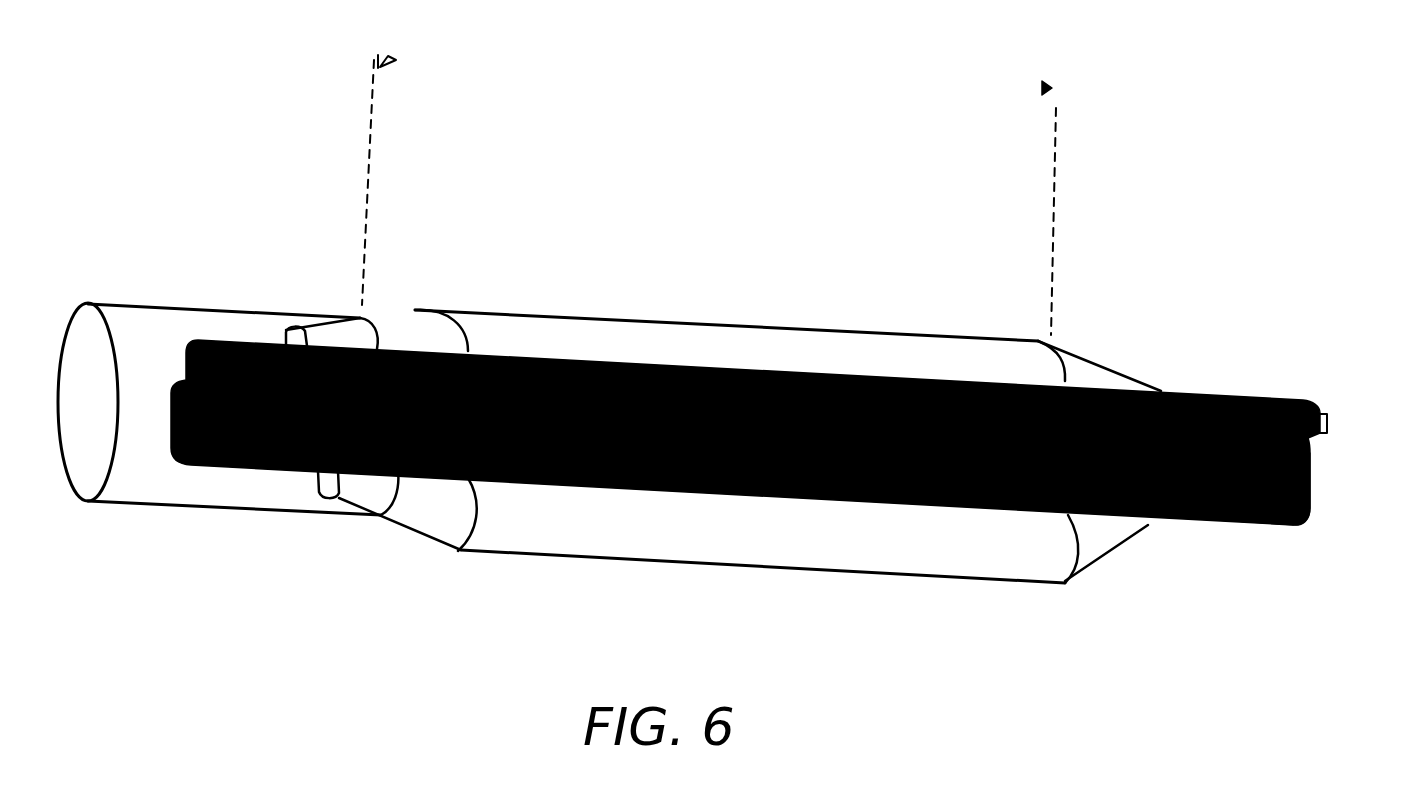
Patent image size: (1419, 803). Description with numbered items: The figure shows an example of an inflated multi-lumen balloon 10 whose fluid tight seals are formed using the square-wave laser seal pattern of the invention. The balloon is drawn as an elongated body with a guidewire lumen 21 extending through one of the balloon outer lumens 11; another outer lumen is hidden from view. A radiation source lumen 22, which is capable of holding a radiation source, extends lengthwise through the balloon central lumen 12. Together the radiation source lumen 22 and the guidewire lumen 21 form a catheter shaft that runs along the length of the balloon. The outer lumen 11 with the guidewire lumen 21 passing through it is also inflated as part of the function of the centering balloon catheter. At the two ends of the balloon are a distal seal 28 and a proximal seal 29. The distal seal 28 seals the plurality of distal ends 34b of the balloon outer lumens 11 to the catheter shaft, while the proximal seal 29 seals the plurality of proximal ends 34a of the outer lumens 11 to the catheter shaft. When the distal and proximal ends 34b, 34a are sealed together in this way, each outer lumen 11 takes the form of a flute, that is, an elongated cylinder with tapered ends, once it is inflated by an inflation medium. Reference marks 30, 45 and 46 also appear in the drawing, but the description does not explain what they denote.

The multi-lumen balloon 10 is at (700, 313).
The balloon outer lumen 11 is at (733, 337).
The balloon central lumen 12 is at (1183, 513).
The guidewire lumen 21 is at (1227, 383).
The radiation source lumen 22 is at (1277, 513).
The distal seal 28 is at (1143, 553).
The proximal seal 29 is at (370, 278).
The distance D 30 is at (717, 185).
The proximal ends of the balloon outer lumens 34a is at (427, 307).
The distal ends of the balloon outer lumens 34b is at (1082, 367).
The connector 45 is at (1317, 417).
The tube 46 is at (173, 300).